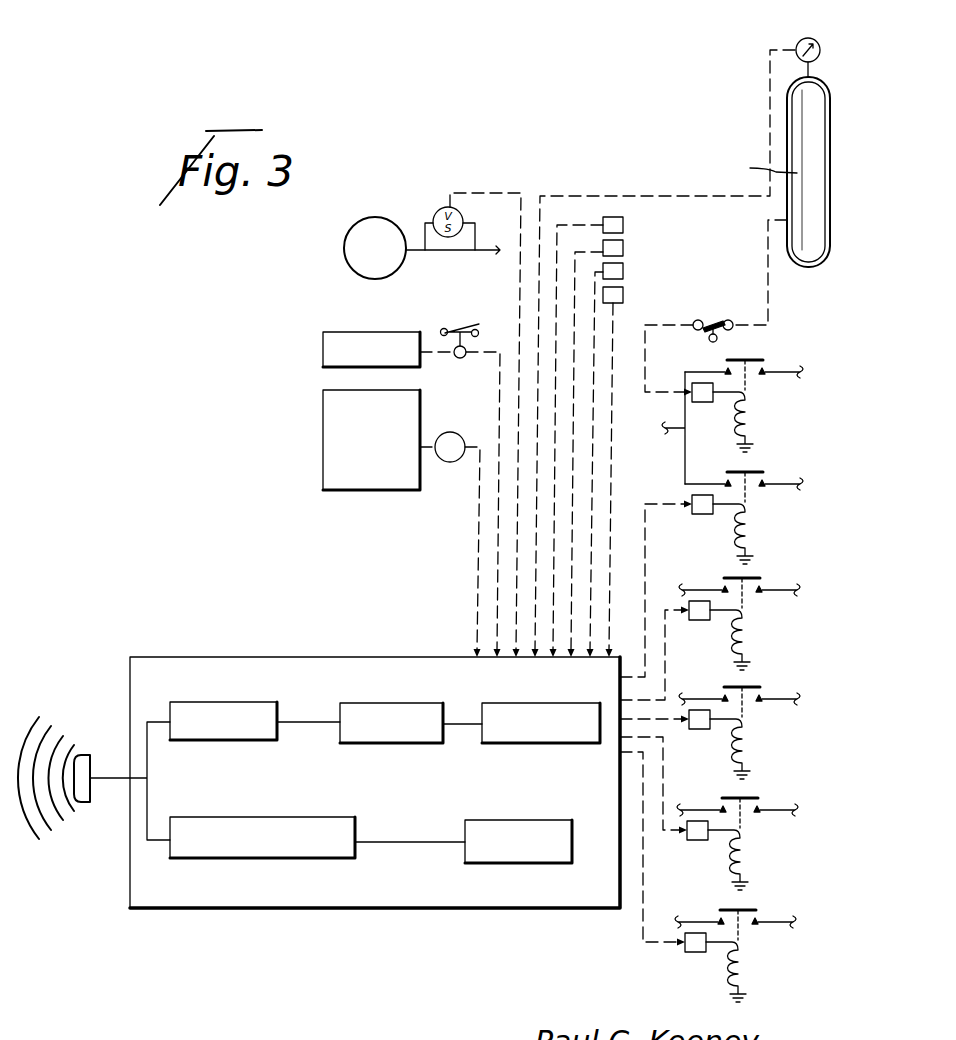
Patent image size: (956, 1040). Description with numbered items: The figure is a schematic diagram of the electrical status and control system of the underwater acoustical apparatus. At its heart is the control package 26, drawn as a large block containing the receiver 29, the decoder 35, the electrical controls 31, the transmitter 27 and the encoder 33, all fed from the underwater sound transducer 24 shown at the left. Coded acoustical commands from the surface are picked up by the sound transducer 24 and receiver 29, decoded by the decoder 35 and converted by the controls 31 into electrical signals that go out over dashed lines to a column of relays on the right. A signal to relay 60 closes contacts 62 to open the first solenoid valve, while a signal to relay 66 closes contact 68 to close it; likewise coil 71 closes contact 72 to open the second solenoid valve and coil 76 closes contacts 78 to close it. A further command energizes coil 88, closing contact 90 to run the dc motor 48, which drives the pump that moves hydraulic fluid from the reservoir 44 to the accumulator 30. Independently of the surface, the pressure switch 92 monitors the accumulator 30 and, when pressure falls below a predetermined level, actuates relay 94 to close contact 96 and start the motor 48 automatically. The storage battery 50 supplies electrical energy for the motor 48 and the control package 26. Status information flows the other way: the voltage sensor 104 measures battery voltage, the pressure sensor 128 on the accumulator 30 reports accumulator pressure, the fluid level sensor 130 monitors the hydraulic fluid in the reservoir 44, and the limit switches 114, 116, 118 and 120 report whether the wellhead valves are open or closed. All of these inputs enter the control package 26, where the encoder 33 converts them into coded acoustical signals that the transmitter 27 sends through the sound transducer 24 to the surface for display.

The pressure sensor 128 is at (808, 38).
The accumulator 30 is at (812, 125).
The pressure switch 92 is at (716, 320).
The dc motor 48 is at (374, 217).
The limit switch 114 is at (624, 224).
The limit switch 116 is at (624, 248).
The limit switch 118 is at (624, 272).
The limit switch 120 is at (624, 295).
The reservoir 44 is at (323, 347).
The fluid level sensor 130 is at (458, 359).
The storage battery 50 is at (323, 477).
The voltage sensor 104 is at (450, 462).
The control package 26 is at (172, 657).
The sound transducer 24 is at (90, 752).
The receiver 29 is at (224, 702).
The decoder 35 is at (397, 703).
The electrical controls 31 is at (550, 703).
The transmitter 27 is at (258, 817).
The encoder 33 is at (515, 820).
The contact 96 is at (750, 357).
The relay 94 is at (753, 414).
The contact 90 is at (750, 469).
The coil 88 is at (753, 526).
The contacts 62 is at (747, 575).
The relay 60 is at (750, 632).
The contact 68 is at (747, 684).
The relay 66 is at (750, 741).
The contact 72 is at (745, 795).
The coil 71 is at (748, 852).
The contacts 78 is at (743, 907).
The coil 76 is at (746, 964).